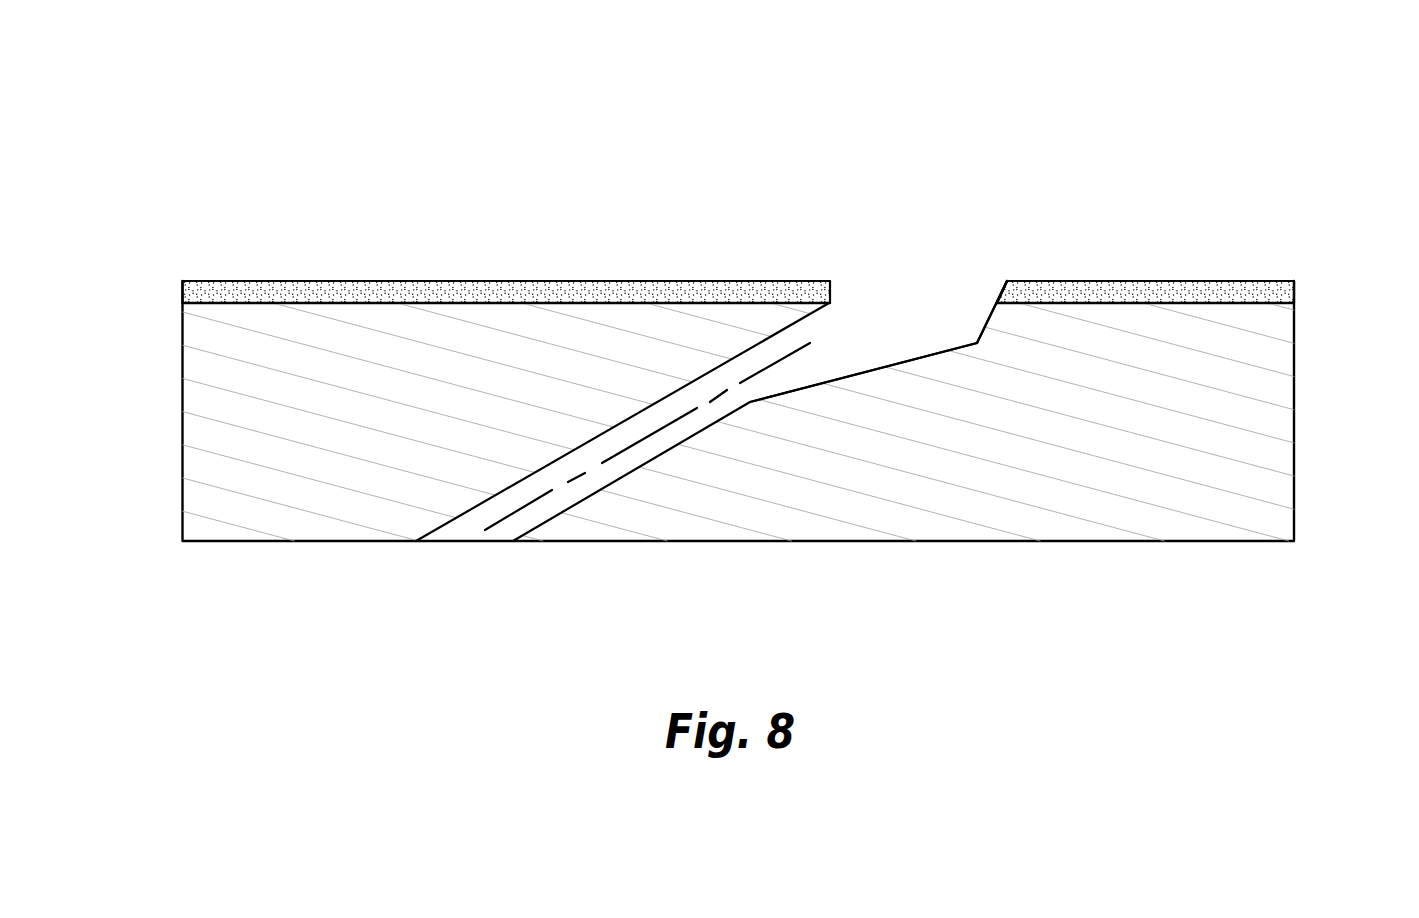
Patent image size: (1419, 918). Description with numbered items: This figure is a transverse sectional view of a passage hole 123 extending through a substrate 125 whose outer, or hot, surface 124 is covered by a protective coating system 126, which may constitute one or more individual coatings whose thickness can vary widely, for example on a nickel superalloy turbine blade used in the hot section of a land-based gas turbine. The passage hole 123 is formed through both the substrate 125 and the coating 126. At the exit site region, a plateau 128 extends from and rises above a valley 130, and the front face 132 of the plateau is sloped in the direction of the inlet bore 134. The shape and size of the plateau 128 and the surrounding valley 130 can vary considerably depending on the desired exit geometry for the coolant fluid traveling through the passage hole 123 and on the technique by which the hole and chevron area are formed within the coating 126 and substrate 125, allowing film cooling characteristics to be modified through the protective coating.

The passage hole 123 is at (1042, 158).
The outer surface 124 is at (196, 301).
The substrate 125 is at (1294, 413).
The protective coating system 126 is at (1180, 293).
The plateau 128 is at (1013, 323).
The valley 130 is at (923, 353).
The front face 132 is at (995, 307).
The inlet bore 134 is at (510, 530).